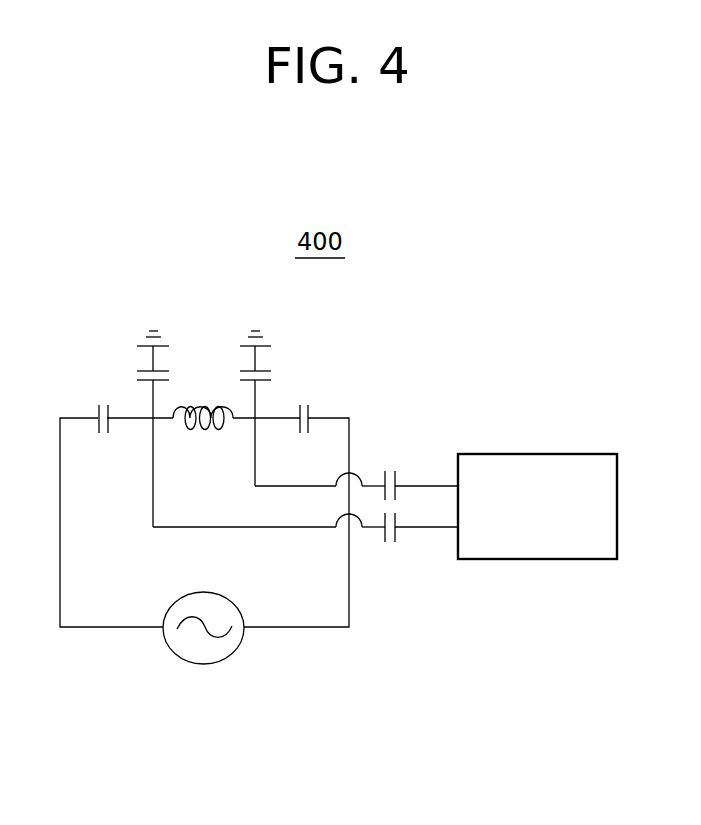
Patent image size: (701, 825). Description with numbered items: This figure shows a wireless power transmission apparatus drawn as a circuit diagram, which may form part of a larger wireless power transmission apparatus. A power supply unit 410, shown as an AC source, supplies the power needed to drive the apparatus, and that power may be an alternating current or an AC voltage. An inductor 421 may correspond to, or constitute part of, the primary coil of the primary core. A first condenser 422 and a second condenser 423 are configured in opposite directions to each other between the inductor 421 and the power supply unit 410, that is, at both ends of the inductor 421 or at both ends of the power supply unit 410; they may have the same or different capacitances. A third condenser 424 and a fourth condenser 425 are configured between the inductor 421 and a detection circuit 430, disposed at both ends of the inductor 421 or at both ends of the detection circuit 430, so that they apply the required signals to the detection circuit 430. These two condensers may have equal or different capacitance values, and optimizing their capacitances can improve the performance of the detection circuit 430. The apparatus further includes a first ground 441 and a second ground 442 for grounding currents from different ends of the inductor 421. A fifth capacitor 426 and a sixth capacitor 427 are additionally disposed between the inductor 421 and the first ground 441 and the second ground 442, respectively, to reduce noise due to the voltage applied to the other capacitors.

The power supply unit 410 is at (203, 665).
The inductor 421 is at (195, 405).
The first condenser 422 is at (100, 403).
The second condenser 423 is at (310, 402).
The third condenser 424 is at (392, 545).
The fourth condenser 425 is at (391, 470).
The fifth capacitor 426 is at (137, 376).
The sixth capacitor 427 is at (272, 376).
The detection circuit 430 is at (578, 453).
The first ground 441 is at (137, 338).
The second ground 442 is at (270, 338).